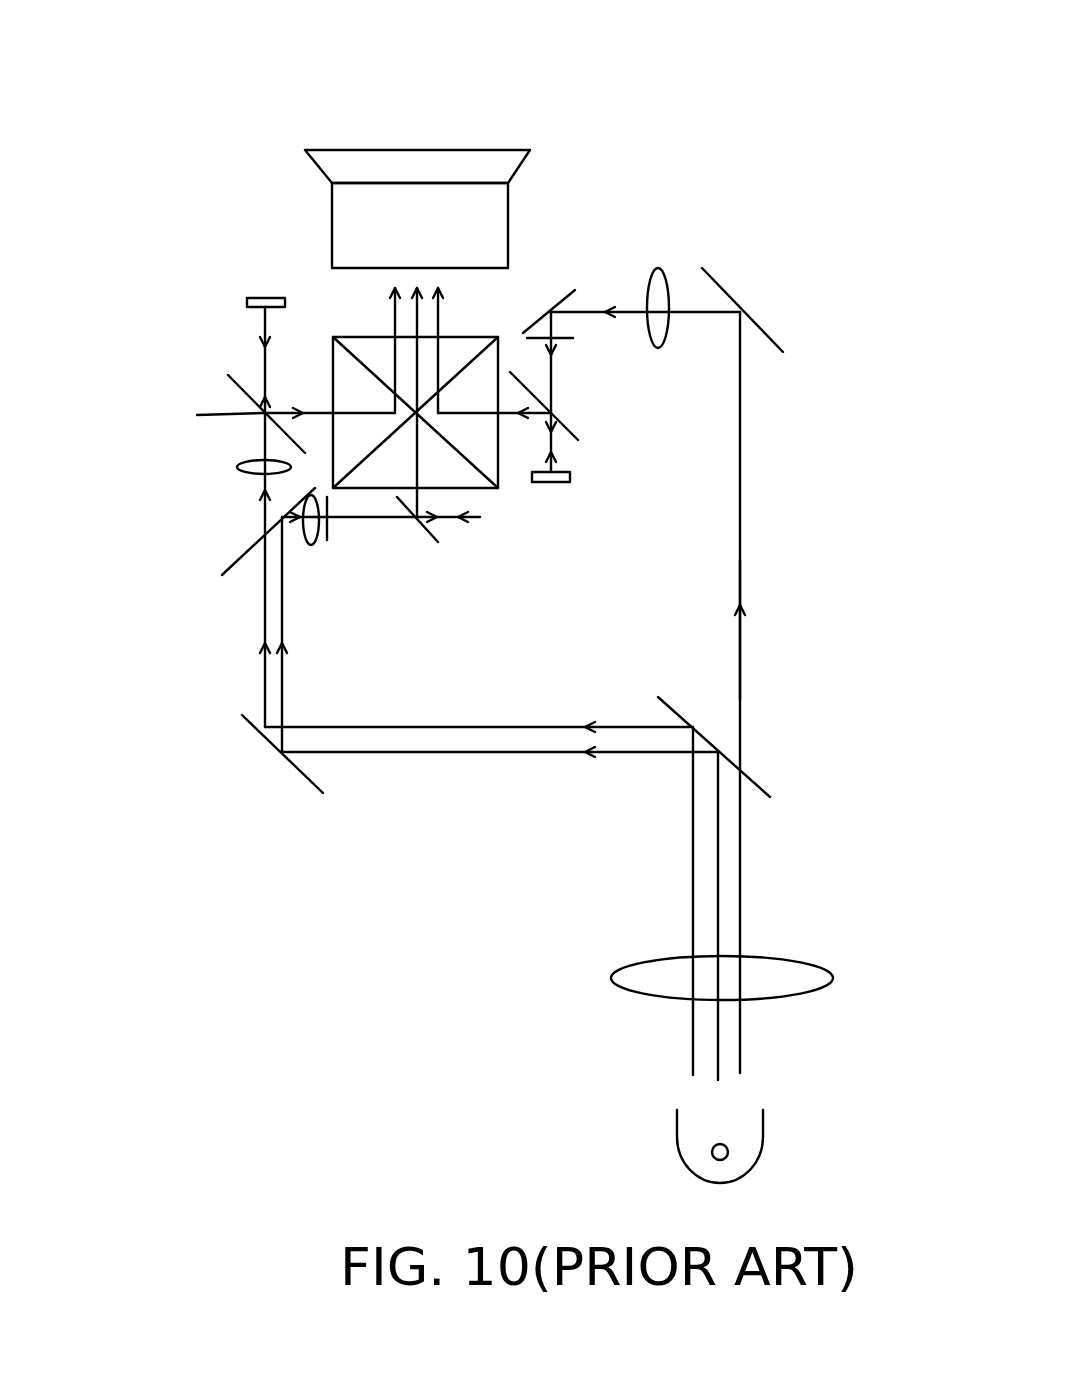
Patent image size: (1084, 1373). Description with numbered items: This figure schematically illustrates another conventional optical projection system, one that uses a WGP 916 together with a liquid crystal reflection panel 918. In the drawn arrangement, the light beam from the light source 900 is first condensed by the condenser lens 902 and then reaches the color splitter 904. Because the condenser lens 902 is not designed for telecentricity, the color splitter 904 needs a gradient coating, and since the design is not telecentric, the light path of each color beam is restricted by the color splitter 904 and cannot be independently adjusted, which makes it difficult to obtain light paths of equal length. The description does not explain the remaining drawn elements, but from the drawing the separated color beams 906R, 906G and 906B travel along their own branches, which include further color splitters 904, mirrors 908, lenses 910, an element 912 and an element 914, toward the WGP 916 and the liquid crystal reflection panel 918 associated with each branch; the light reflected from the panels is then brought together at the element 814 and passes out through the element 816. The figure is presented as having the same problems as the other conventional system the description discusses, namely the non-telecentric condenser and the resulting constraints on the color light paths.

The projection lens 816 is at (452, 162).
The cross dichroic prism 814 is at (460, 337).
The liquid crystal reflection panel 918 is at (263, 292).
The WGP 916 is at (230, 415).
The wave plate 914 is at (573, 340).
The mirror 912 is at (562, 296).
The lens 910 is at (670, 267).
The mirror 908 is at (723, 288).
The red light beam 906R is at (513, 728).
The green light beam 906G is at (513, 753).
The blue light beam 906B is at (743, 657).
The color splitter 904 is at (290, 763).
The condenser lens 902 is at (743, 957).
The light source 900 is at (763, 1153).